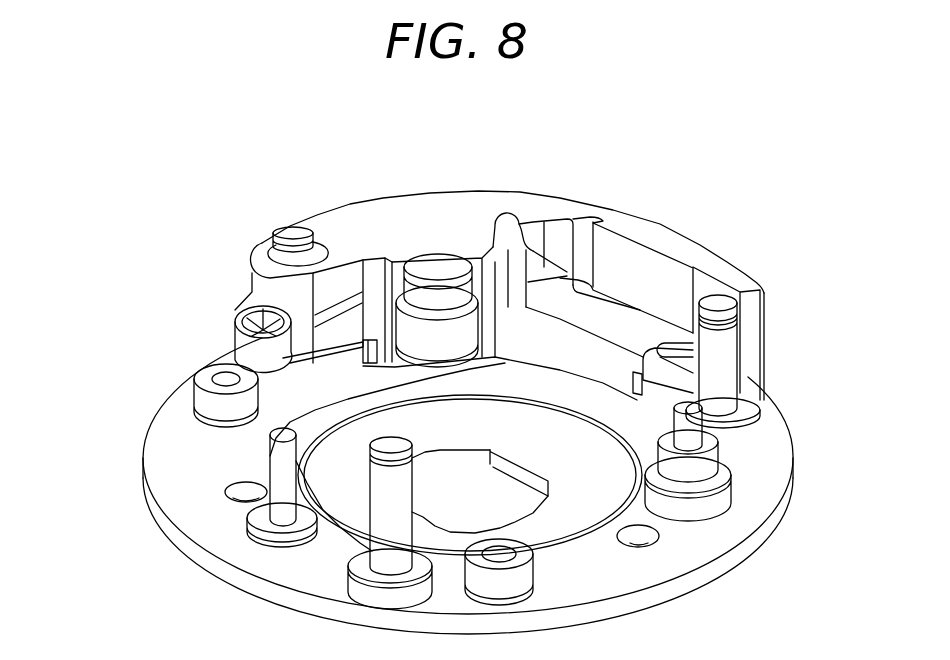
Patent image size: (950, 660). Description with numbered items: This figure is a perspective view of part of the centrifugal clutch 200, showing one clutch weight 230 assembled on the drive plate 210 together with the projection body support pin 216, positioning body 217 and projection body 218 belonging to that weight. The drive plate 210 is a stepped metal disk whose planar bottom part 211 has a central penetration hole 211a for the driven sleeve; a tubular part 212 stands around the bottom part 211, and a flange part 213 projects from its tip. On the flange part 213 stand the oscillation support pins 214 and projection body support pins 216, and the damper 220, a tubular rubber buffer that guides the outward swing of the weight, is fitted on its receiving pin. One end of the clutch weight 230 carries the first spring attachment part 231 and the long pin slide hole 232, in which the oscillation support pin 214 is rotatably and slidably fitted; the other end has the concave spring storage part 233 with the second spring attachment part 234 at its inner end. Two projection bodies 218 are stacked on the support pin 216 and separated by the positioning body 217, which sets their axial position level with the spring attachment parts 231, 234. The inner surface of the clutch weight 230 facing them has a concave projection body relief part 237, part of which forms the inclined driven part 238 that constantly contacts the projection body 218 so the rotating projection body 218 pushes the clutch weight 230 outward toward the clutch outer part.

The centrifugal clutch 200 is at (104, 171).
The drive plate 210 is at (161, 400).
The bottom part 211 is at (507, 443).
The penetration hole 211a is at (550, 483).
The tubular part 212 is at (622, 453).
The flange part 213 is at (163, 456).
The oscillation support pin 214 is at (290, 228).
The projection body support pin 216 is at (700, 430).
The positioning body 217 is at (703, 457).
The projection body 218 is at (720, 487).
The damper 220 is at (684, 393).
The clutch weight 230 is at (560, 197).
The first spring attachment part 231 is at (250, 313).
The pin slide hole 232 is at (313, 243).
The spring storage part 233 is at (664, 292).
The second spring attachment part 234 is at (503, 222).
The projection body relief part 237 is at (496, 339).
The driven part 238 is at (474, 282).